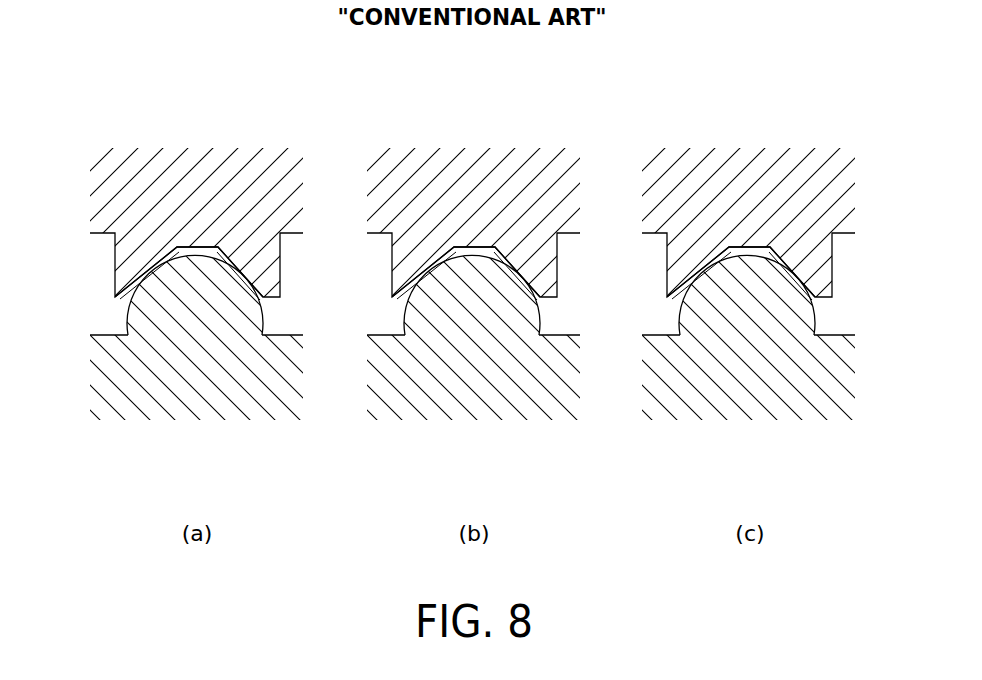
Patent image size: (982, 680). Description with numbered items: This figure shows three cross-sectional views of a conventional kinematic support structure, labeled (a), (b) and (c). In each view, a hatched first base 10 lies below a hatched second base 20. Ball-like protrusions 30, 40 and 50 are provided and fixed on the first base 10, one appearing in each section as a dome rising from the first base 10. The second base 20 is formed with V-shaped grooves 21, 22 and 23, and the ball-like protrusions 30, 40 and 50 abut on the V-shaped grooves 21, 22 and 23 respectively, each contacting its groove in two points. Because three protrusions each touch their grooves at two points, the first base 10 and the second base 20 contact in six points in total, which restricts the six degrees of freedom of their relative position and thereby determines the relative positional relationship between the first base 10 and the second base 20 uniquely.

The first base 10 is at (182, 394).
The second base 20 is at (195, 190).
The V-shaped groove 21 is at (197, 246).
The V-shaped groove 22 is at (485, 255).
The V-shaped groove 23 is at (757, 253).
The ball-like protrusion 30 is at (230, 310).
The ball-like protrusion 40 is at (505, 310).
The ball-like protrusion 50 is at (780, 312).